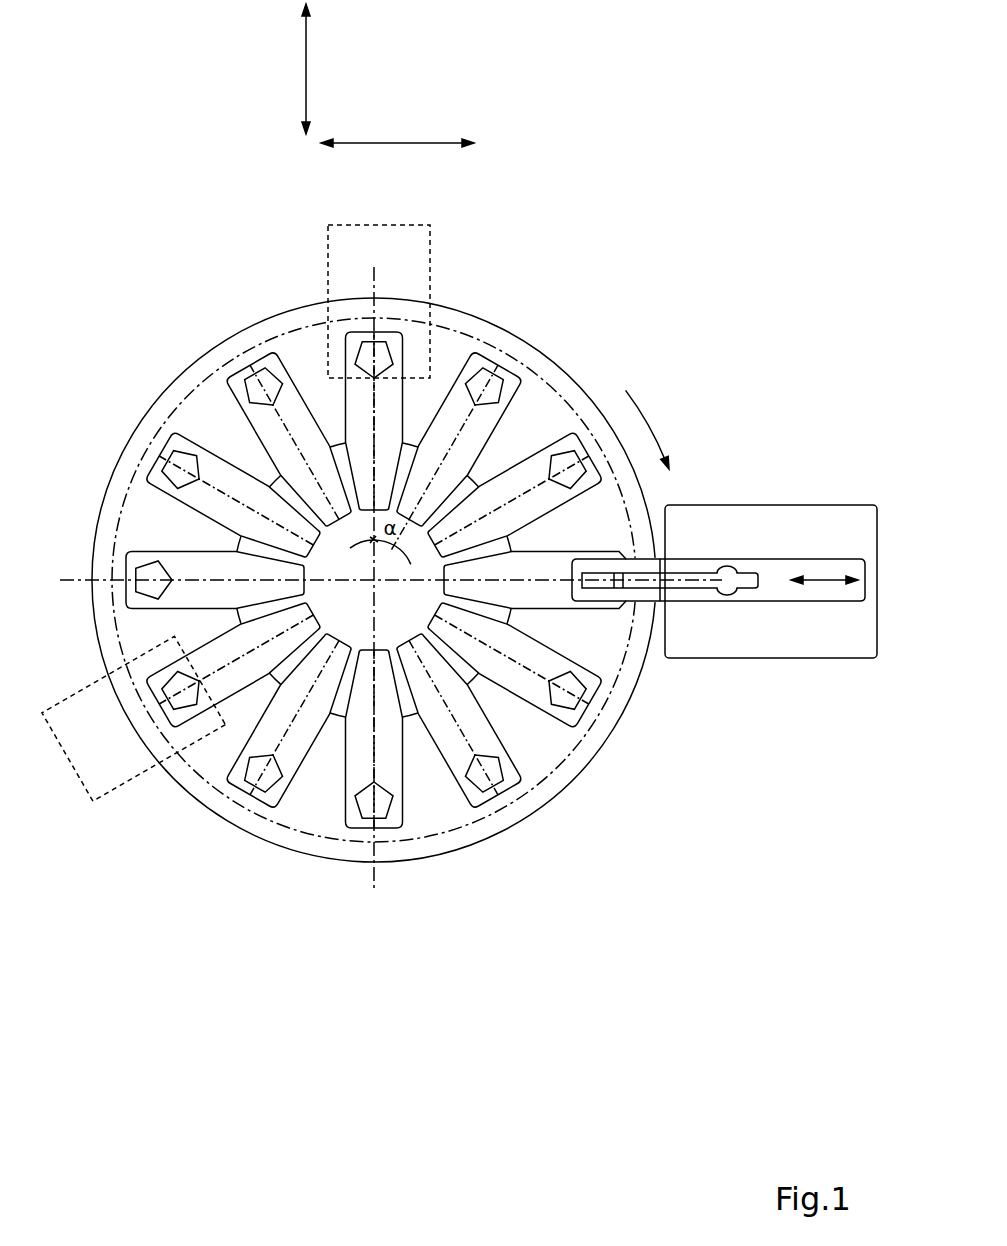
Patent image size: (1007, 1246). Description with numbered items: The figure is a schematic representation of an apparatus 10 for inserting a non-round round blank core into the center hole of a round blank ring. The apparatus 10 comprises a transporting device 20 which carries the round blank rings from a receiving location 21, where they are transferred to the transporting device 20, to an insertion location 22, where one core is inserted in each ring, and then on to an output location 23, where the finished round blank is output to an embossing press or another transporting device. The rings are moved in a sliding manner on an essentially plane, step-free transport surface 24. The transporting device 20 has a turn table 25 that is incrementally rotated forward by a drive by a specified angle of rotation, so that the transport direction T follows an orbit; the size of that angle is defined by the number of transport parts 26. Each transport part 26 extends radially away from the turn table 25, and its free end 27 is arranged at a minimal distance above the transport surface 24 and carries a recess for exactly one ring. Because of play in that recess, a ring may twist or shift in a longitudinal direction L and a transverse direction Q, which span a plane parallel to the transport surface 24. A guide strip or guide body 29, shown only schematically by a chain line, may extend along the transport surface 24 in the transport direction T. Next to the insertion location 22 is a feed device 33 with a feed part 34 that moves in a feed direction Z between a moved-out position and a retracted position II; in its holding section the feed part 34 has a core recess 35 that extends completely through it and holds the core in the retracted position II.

The apparatus 10 is at (675, 243).
The transporting device 20 is at (572, 363).
The receiving location 21 is at (350, 333).
The insertion location 22 is at (640, 548).
The output location 23 is at (127, 737).
The transport surface 24 is at (440, 357).
The turn table 25 is at (410, 713).
The transport part 26 is at (289, 447).
The free end 27 is at (262, 367).
The guide strip or guide body 29 is at (498, 347).
The feed device 33 is at (805, 505).
The feed part 34 is at (763, 602).
The core recess 35 is at (733, 590).
The retracted position II is at (717, 612).
The feed direction Z is at (823, 582).
The transport direction T is at (645, 413).
The transverse direction Q is at (305, 58).
The longitudinal direction L is at (388, 143).